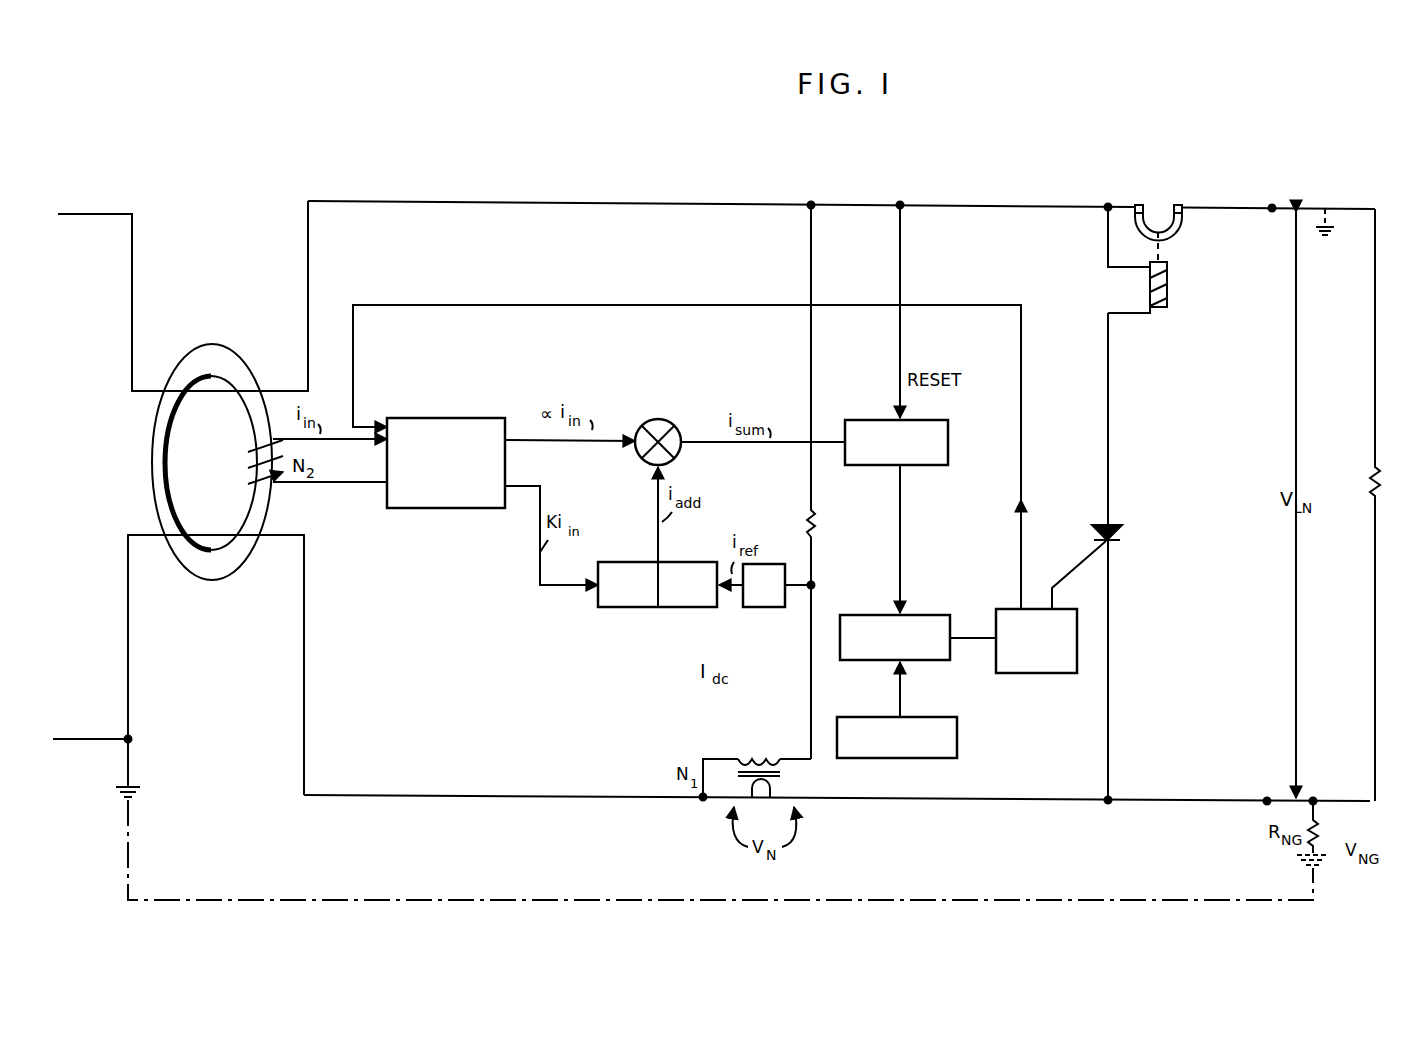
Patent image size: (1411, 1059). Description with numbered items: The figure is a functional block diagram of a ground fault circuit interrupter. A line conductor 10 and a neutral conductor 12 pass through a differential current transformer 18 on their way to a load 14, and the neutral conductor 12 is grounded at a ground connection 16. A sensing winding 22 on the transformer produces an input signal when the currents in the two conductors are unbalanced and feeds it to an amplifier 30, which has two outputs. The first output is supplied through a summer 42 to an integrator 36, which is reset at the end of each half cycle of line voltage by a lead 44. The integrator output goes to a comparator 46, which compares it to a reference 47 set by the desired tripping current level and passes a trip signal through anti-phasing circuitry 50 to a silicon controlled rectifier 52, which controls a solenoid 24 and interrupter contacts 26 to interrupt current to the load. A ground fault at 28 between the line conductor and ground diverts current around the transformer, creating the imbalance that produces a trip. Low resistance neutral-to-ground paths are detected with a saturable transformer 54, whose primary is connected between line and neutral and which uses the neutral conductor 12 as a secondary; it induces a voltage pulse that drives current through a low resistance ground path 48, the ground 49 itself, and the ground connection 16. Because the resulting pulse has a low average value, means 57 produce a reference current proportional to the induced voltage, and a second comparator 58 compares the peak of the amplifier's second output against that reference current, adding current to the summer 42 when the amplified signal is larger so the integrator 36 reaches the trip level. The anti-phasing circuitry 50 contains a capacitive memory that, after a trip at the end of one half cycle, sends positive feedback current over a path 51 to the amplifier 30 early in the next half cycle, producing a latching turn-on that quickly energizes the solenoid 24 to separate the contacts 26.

The line conductor 10 is at (132, 258).
The neutral conductor 12 is at (128, 648).
The load 14 is at (1374, 470).
The ground connection 16 is at (128, 782).
The differential current transformer 18 is at (244, 322).
The sensing winding 22 is at (287, 484).
The solenoid 24 is at (1167, 298).
The interrupter contacts 26 is at (1183, 215).
The ground fault 28 is at (1330, 238).
The amplifier 30 is at (448, 418).
The integrator 36 is at (948, 445).
The summer 42 is at (656, 418).
The reset lead 44 is at (900, 360).
The comparator 46 is at (878, 660).
The reference 47 is at (957, 735).
The ground path 48 is at (1316, 805).
The ground 49 is at (604, 898).
The anti-phasing circuitry 50 is at (1045, 673).
The positive feedback path 51 is at (624, 307).
The silicon controlled rectifier 52 is at (1098, 522).
The saturable transformer 54 is at (770, 760).
The reference current means 57 is at (776, 564).
The comparator 58 is at (655, 607).